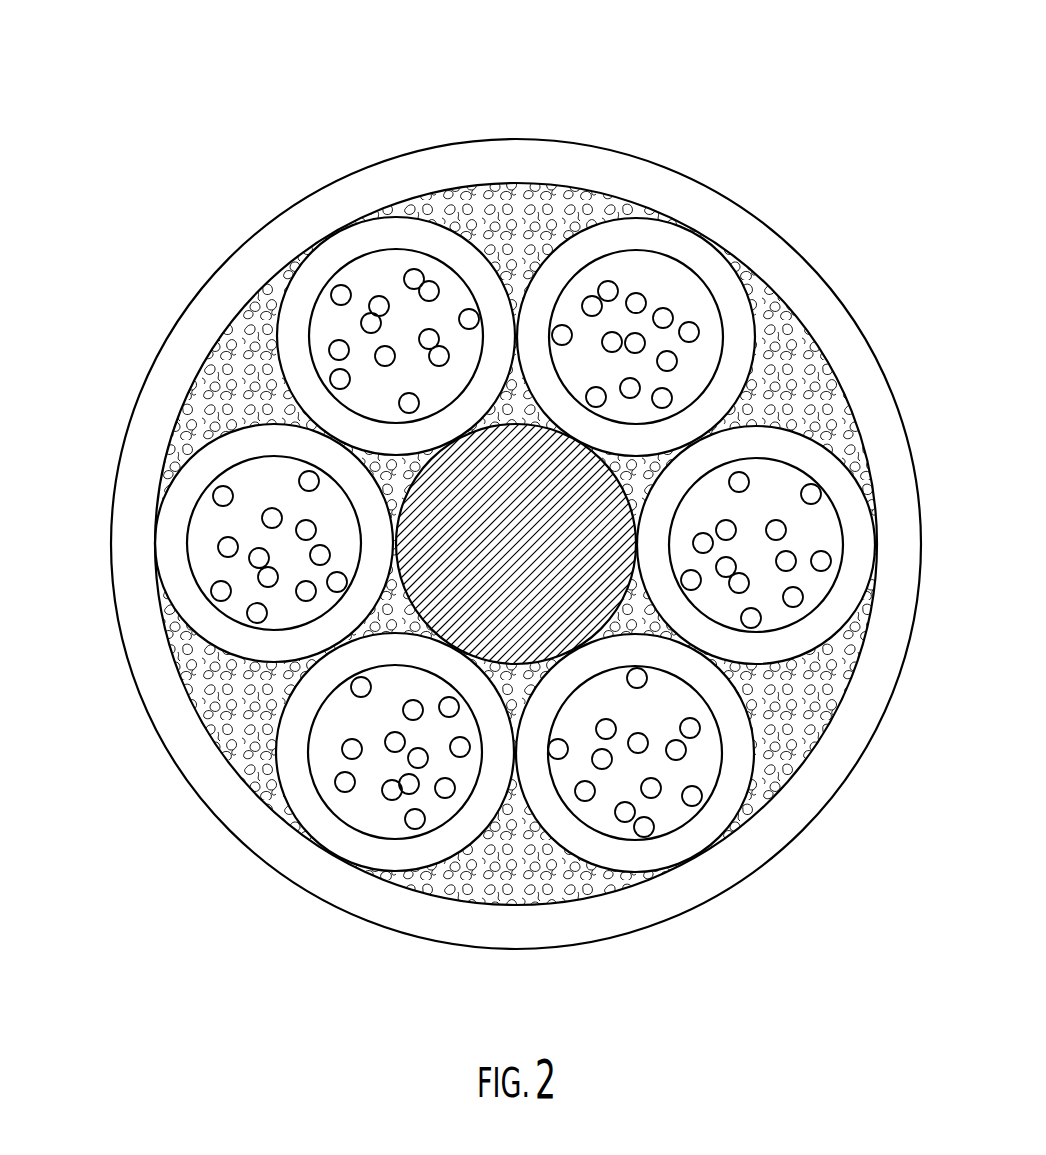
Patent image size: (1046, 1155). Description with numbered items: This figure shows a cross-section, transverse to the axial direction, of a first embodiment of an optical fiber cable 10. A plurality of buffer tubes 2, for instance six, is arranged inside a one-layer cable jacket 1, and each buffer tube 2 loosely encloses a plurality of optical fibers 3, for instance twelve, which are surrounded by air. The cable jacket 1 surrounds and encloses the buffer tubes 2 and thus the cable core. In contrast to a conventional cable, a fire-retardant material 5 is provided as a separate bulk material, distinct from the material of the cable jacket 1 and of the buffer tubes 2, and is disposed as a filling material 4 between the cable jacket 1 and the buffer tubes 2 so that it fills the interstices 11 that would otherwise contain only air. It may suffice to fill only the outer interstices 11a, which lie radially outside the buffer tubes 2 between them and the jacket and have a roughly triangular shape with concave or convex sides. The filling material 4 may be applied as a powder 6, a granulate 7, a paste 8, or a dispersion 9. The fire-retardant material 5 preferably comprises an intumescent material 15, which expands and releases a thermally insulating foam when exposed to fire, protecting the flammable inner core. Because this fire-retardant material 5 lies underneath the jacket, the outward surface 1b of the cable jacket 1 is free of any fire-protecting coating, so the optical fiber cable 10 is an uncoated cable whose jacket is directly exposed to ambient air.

The cable jacket 1 is at (800, 302).
The outward surface of the cable jacket 1b is at (703, 903).
The buffer tube 2 is at (853, 555).
The optical fiber 3 is at (600, 728).
The filling material 4 is at (765, 303).
The fire-retardant material 5 is at (511, 692).
The powder 6 is at (459, 544).
The granulate 7 is at (459, 544).
The paste 8 is at (459, 544).
The dispersion 9 is at (459, 544).
The optical fiber cable 10 is at (501, 519).
The interstices 11 is at (243, 367).
The outer interstices 11a is at (516, 544).
The intumescent material 15 is at (459, 544).